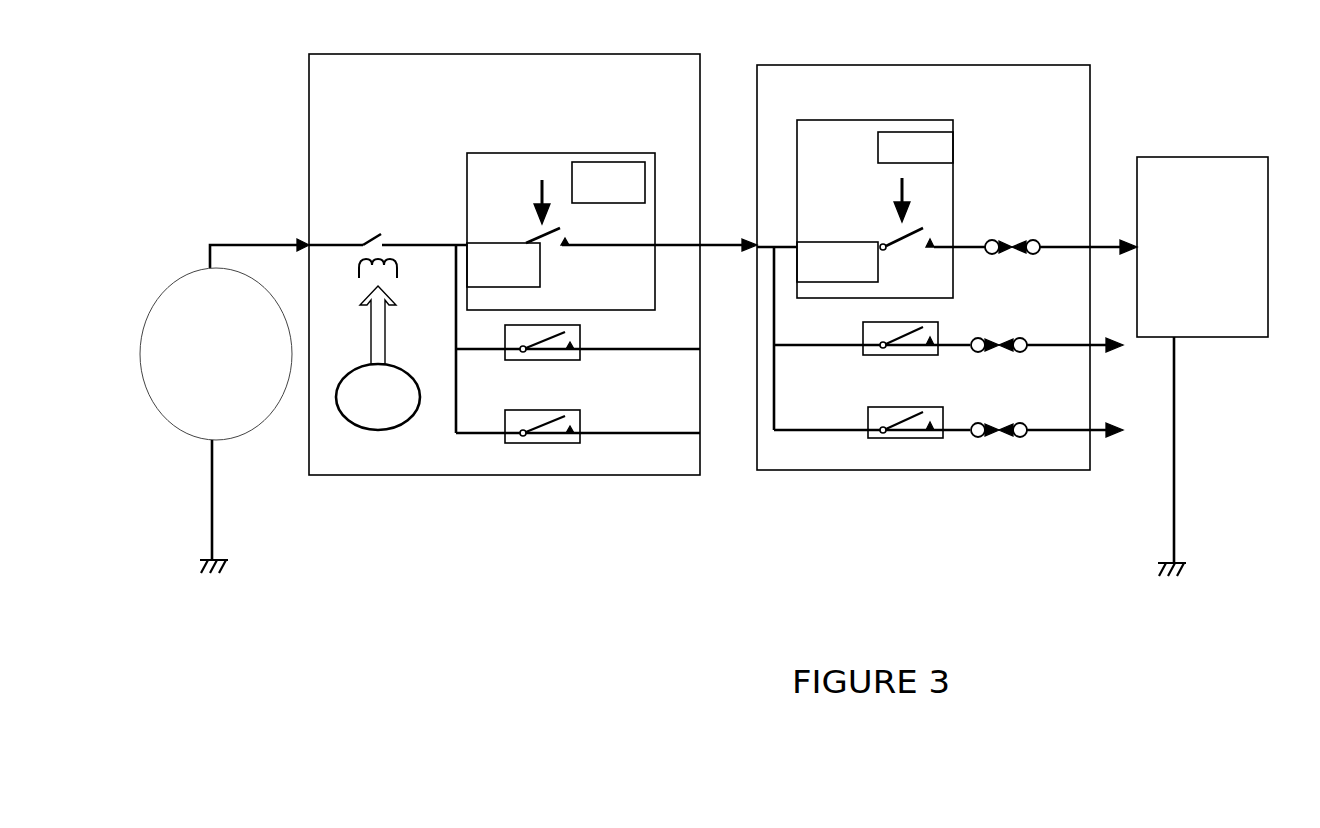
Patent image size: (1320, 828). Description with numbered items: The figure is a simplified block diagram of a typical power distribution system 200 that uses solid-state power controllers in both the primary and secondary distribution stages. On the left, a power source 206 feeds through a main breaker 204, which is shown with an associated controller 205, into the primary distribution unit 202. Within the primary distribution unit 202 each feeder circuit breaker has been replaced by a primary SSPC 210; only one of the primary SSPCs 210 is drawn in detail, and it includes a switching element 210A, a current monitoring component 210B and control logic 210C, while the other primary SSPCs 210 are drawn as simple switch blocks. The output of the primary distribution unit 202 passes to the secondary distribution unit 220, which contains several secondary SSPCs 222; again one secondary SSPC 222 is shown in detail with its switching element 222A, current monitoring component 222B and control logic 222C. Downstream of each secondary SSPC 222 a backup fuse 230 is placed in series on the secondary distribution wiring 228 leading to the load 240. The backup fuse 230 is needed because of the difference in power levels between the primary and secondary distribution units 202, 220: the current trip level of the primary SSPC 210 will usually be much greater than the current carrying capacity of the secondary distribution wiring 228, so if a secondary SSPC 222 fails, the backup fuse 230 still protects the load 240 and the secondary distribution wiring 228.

The power distribution system 200 is at (503, 388).
The primary distribution unit 202 is at (504, 264).
The main circuit breaker 204 is at (373, 240).
The controller 205 is at (378, 358).
The power source 206 is at (216, 420).
The primary SSPC 210 is at (578, 353).
The switching element 210A is at (561, 231).
The current monitoring component 210B is at (503, 265).
The control logic 210C is at (608, 182).
The secondary distribution unit 220 is at (923, 267).
The secondary SSPC 222 is at (872, 355).
The secondary breaker switch contact 222A is at (875, 209).
The secondary breaker sensing unit 222B is at (837, 262).
The secondary breaker trip unit 222C is at (915, 147).
The secondary distribution wiring 228 is at (1082, 346).
The backup fuse 230 is at (987, 327).
The load 240 is at (1202, 366).